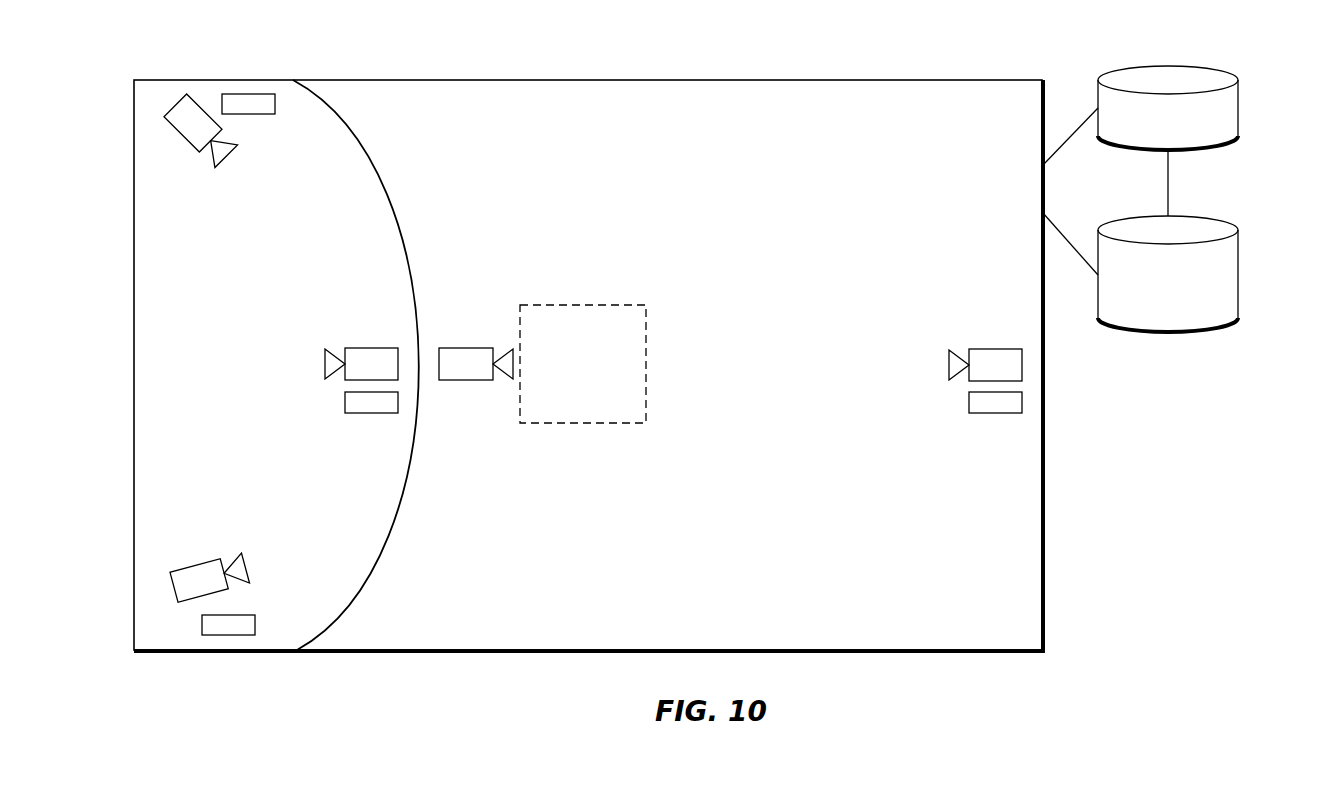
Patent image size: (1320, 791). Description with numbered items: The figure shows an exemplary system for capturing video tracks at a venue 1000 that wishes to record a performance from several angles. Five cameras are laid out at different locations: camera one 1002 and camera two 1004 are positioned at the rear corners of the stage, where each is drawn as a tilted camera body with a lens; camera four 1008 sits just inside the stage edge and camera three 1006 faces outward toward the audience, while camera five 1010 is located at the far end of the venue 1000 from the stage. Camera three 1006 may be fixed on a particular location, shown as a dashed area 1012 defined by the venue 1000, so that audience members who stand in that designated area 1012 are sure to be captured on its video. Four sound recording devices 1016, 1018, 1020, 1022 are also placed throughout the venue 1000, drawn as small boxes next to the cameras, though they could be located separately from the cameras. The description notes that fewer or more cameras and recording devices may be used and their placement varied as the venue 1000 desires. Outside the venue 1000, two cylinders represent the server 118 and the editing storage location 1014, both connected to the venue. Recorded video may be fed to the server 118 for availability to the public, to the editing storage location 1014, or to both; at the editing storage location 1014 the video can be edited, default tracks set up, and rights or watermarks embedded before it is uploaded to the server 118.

The venue 1000 is at (822, 80).
The camera 1 1002 is at (180, 137).
The camera 2 1004 is at (196, 562).
The camera 3 1006 is at (466, 348).
The camera 4 1008 is at (370, 348).
The camera 5 1010 is at (995, 349).
The area 1012 is at (602, 305).
The editing storage location 1014 is at (1195, 218).
The sound recording device 1016 is at (258, 114).
The sound recording device 1018 is at (240, 615).
The sound recording device 1020 is at (372, 413).
The sound recording device 1022 is at (995, 413).
The server 118 is at (1195, 66).